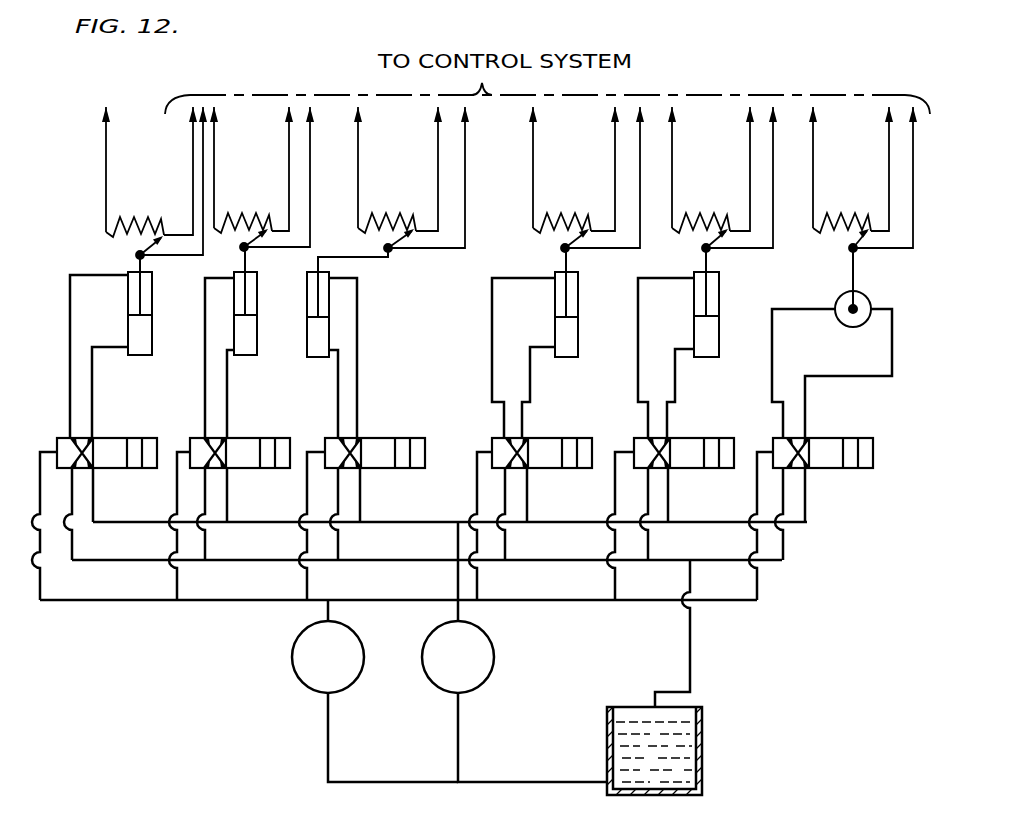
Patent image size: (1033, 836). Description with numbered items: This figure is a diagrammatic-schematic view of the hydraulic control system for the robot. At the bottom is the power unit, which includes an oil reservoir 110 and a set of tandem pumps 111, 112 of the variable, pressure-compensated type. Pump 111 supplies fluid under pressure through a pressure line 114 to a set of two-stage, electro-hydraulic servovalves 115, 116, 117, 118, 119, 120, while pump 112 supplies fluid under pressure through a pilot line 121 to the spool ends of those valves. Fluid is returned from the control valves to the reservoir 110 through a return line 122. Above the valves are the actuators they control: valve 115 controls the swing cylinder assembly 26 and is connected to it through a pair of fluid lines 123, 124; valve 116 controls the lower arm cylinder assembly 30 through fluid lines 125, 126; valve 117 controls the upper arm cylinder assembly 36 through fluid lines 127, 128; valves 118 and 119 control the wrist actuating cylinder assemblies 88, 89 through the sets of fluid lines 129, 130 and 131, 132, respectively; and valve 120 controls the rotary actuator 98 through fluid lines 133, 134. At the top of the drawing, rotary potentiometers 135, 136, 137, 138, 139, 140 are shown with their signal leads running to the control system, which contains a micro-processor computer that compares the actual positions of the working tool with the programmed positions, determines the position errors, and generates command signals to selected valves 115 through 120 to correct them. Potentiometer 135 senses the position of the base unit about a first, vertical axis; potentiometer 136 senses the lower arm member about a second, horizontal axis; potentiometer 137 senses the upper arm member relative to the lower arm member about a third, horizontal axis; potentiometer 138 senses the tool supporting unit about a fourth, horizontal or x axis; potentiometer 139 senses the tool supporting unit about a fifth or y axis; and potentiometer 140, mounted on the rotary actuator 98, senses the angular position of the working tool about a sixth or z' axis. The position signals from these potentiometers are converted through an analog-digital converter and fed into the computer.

The swing cylinder assembly 26 is at (152, 315).
The lower arm cylinder assembly 30 is at (257, 322).
The upper arm cylinder assembly 36 is at (329, 327).
The wrist actuating cylinder assembly 88 is at (578, 327).
The wrist actuating cylinder assembly 89 is at (719, 330).
The rotary actuator 98 is at (871, 300).
The oil reservoir 110 is at (702, 760).
The pump 111 is at (493, 675).
The pump 112 is at (352, 684).
The pressure line 114 is at (387, 524).
The electro-hydraulic servovalve 115 is at (146, 418).
The electro-hydraulic servovalve 116 is at (284, 418).
The electro-hydraulic servovalve 117 is at (421, 420).
The electro-hydraulic servovalve 118 is at (583, 420).
The electro-hydraulic servovalve 119 is at (733, 420).
The electro-hydraulic servovalve 120 is at (880, 420).
The pilot line 121 is at (110, 600).
The return line 122 is at (234, 562).
The fluid line 123 is at (70, 388).
The fluid line 124 is at (92, 388).
The fluid line 125 is at (205, 385).
The fluid line 126 is at (227, 387).
The fluid line 127 is at (338, 392).
The fluid line 128 is at (357, 390).
The fluid line 129 is at (492, 385).
The fluid line 130 is at (530, 383).
The fluid line 131 is at (638, 393).
The fluid line 132 is at (675, 388).
The fluid line 133 is at (772, 355).
The fluid line 134 is at (848, 376).
The rotary potentiometer 135 is at (106, 204).
The rotary potentiometer 136 is at (268, 186).
The rotary potentiometer 137 is at (402, 186).
The rotary potentiometer 138 is at (580, 186).
The rotary potentiometer 139 is at (720, 186).
The rotary potentiometer 140 is at (860, 186).